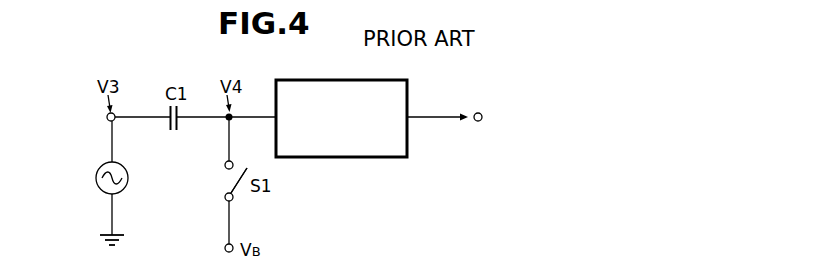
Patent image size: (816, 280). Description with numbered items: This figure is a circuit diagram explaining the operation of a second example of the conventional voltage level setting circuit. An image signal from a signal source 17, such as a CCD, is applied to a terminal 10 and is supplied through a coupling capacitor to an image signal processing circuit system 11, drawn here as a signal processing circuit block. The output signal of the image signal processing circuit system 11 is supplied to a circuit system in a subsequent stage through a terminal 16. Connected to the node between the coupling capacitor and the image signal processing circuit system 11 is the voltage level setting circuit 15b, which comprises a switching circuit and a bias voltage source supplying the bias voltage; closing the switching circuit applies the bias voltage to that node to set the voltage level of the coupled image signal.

The terminal 10 is at (107, 115).
The image signal processing circuit system 11 is at (315, 80).
The voltage level setting circuit 15b is at (244, 197).
The terminal 16 is at (482, 113).
The signal source 17 is at (96, 176).